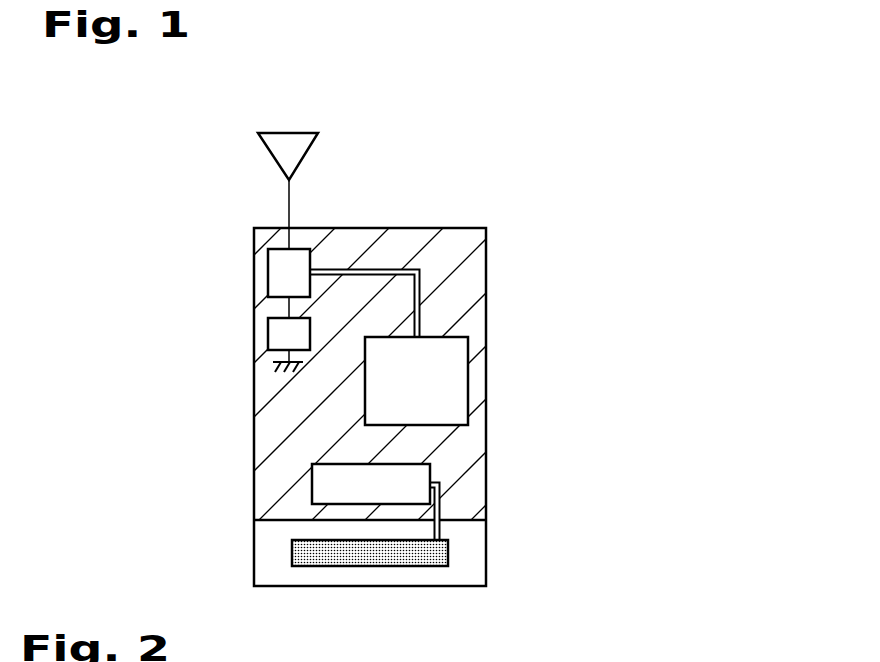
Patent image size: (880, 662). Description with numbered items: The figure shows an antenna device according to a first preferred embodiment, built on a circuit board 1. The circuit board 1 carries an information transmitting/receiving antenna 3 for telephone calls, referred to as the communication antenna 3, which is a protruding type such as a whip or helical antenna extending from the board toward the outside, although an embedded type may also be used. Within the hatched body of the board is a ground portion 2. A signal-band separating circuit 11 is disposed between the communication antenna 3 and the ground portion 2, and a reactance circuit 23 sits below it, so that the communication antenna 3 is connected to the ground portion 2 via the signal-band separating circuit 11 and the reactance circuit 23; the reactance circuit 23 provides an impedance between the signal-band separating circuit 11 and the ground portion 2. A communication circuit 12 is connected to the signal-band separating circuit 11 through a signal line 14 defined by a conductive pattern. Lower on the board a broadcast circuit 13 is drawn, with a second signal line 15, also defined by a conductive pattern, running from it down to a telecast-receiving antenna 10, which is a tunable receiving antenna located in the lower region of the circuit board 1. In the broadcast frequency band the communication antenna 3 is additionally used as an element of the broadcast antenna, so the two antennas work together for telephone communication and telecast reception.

The circuit board 1 is at (486, 243).
The ground portion 2 is at (472, 313).
The information transmitting/receiving antenna 3 is at (297, 154).
The telecast-receiving antenna 10 is at (354, 566).
The signal-band separating circuit 11 is at (278, 263).
The communication circuit 12 is at (455, 376).
The broadcast circuit 13 is at (417, 472).
The signal line 14 is at (396, 268).
The signal line 15 is at (443, 505).
The reactance circuit 23 is at (278, 337).